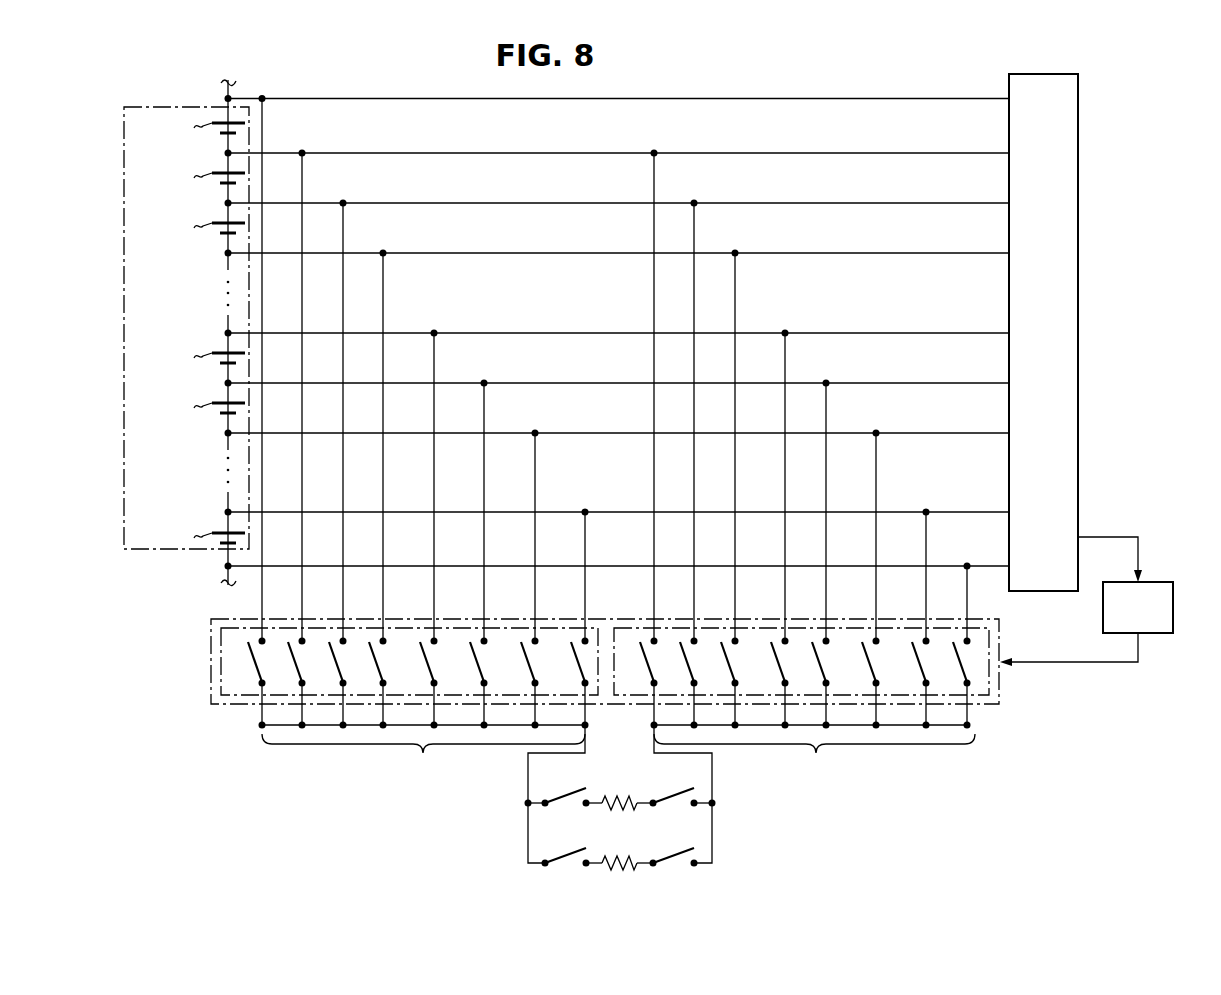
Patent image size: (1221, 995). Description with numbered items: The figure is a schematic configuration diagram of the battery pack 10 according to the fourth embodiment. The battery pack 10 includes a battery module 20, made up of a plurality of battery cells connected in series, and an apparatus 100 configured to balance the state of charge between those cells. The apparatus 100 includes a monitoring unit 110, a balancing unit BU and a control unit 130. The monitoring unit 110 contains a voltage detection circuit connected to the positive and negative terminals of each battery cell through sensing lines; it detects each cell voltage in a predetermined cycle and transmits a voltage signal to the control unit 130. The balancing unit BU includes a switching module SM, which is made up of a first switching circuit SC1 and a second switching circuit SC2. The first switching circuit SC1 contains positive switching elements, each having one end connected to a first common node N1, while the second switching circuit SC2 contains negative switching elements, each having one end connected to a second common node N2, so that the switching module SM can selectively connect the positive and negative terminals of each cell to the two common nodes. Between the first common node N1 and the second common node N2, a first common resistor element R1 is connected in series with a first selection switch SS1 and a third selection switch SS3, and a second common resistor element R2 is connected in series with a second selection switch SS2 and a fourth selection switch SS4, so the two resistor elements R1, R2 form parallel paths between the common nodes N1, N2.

The battery pack 10 is at (290, 46).
The battery module 20 is at (134, 107).
The apparatus 100 is at (1124, 176).
The monitoring unit 110 is at (1054, 74).
The control unit 130 is at (1165, 582).
The balancing unit BU is at (186, 607).
The switching module SM is at (211, 629).
The first switching circuit SC1 is at (221, 660).
The second switching circuit SC2 is at (990, 682).
The first common node N1 is at (423, 759).
The second common node N2 is at (814, 759).
The first common resistor element R1 is at (616, 796).
The second common resistor element R2 is at (616, 856).
The first selection switch SS1 is at (566, 781).
The second selection switch SS2 is at (566, 841).
The third selection switch SS3 is at (674, 781).
The fourth selection switch SS4 is at (674, 841).